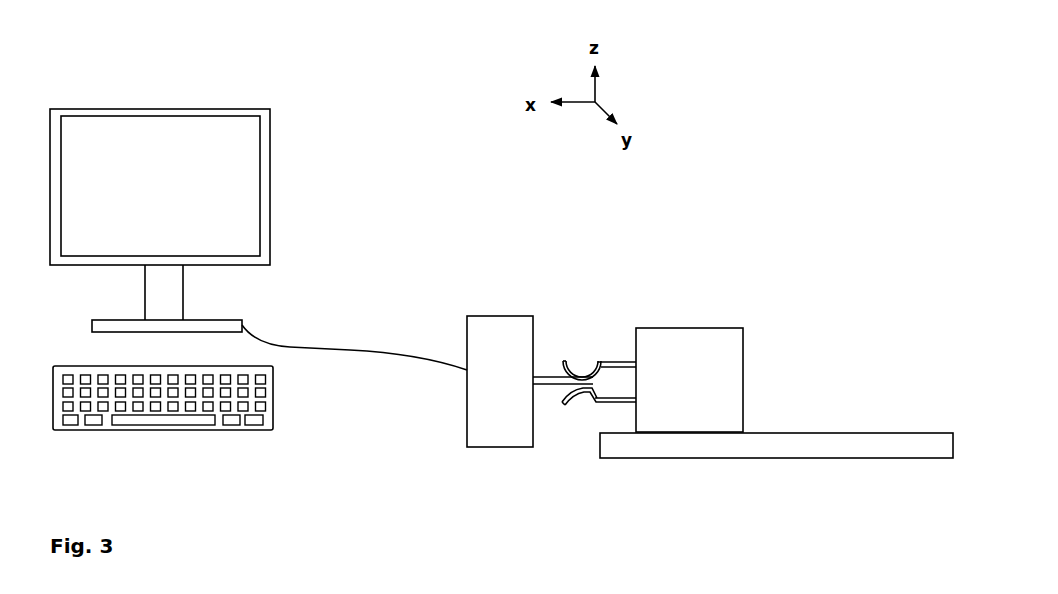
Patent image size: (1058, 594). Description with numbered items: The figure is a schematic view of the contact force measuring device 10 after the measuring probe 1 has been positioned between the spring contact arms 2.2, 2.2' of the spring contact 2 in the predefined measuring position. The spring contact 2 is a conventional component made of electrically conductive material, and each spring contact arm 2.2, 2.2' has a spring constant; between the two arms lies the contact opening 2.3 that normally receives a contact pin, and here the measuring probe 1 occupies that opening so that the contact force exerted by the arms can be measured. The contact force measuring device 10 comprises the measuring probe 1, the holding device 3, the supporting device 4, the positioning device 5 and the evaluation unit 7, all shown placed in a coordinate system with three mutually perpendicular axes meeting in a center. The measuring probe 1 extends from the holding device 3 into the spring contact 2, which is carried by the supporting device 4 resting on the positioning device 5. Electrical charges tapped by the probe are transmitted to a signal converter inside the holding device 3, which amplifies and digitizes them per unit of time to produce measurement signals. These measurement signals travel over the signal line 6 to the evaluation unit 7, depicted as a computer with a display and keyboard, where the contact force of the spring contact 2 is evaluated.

The measuring probe 1 is at (611, 354).
The spring contact 2 is at (615, 301).
The spring contact arm 2.2 is at (577, 320).
The contact opening 2.3 is at (602, 378).
The spring contact arm 2.2' is at (619, 333).
The holding device 3 is at (500, 381).
The supporting device 4 is at (689, 380).
The positioning device 5 is at (818, 446).
The signal line 6 is at (348, 350).
The evaluation unit 7 is at (292, 161).
The contact force measuring device 10 is at (851, 136).